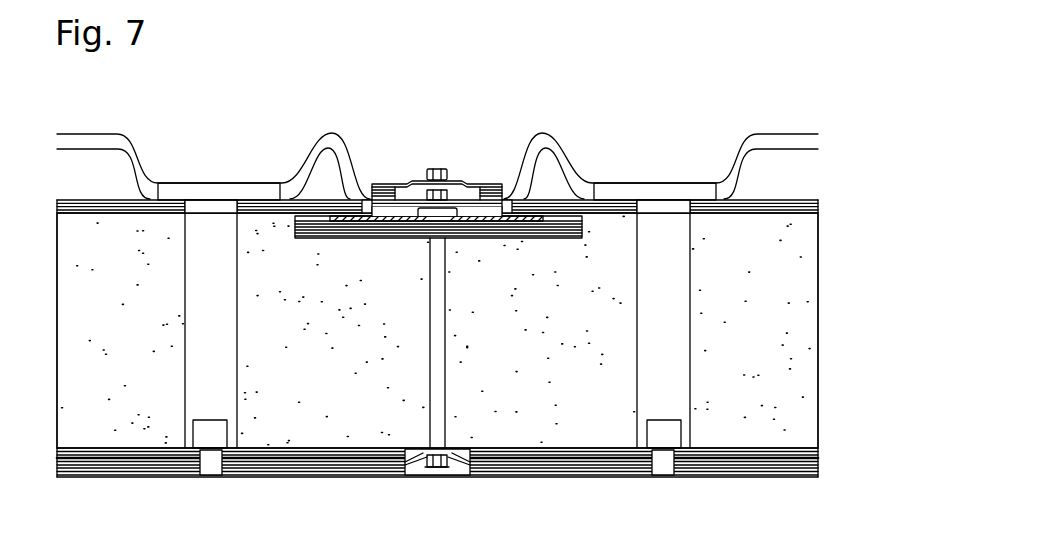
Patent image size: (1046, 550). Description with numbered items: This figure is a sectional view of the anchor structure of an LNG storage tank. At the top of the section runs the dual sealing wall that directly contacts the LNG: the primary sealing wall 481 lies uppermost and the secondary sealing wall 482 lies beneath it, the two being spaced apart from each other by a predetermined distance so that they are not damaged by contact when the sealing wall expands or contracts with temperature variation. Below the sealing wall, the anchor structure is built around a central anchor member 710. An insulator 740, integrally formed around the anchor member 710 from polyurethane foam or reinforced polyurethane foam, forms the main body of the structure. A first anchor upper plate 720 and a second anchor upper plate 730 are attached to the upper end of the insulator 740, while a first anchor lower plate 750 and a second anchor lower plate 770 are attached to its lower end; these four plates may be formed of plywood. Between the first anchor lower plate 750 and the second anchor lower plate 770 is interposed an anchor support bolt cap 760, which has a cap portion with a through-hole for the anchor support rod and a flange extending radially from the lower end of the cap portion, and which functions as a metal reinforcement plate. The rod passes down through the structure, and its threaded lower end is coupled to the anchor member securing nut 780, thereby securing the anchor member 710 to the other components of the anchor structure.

The primary sealing wall 481 is at (349, 145).
The secondary sealing wall 482 is at (347, 172).
The anchor member 710 is at (457, 156).
The first anchor upper plate 720 is at (836, 187).
The second anchor upper plate 730 is at (582, 233).
The insulator 740 is at (792, 334).
The first anchor lower plate 750 is at (800, 453).
The anchor support bolt cap 760 is at (814, 463).
The second anchor lower plate 770 is at (800, 470).
The anchor member securing nut 780 is at (455, 467).